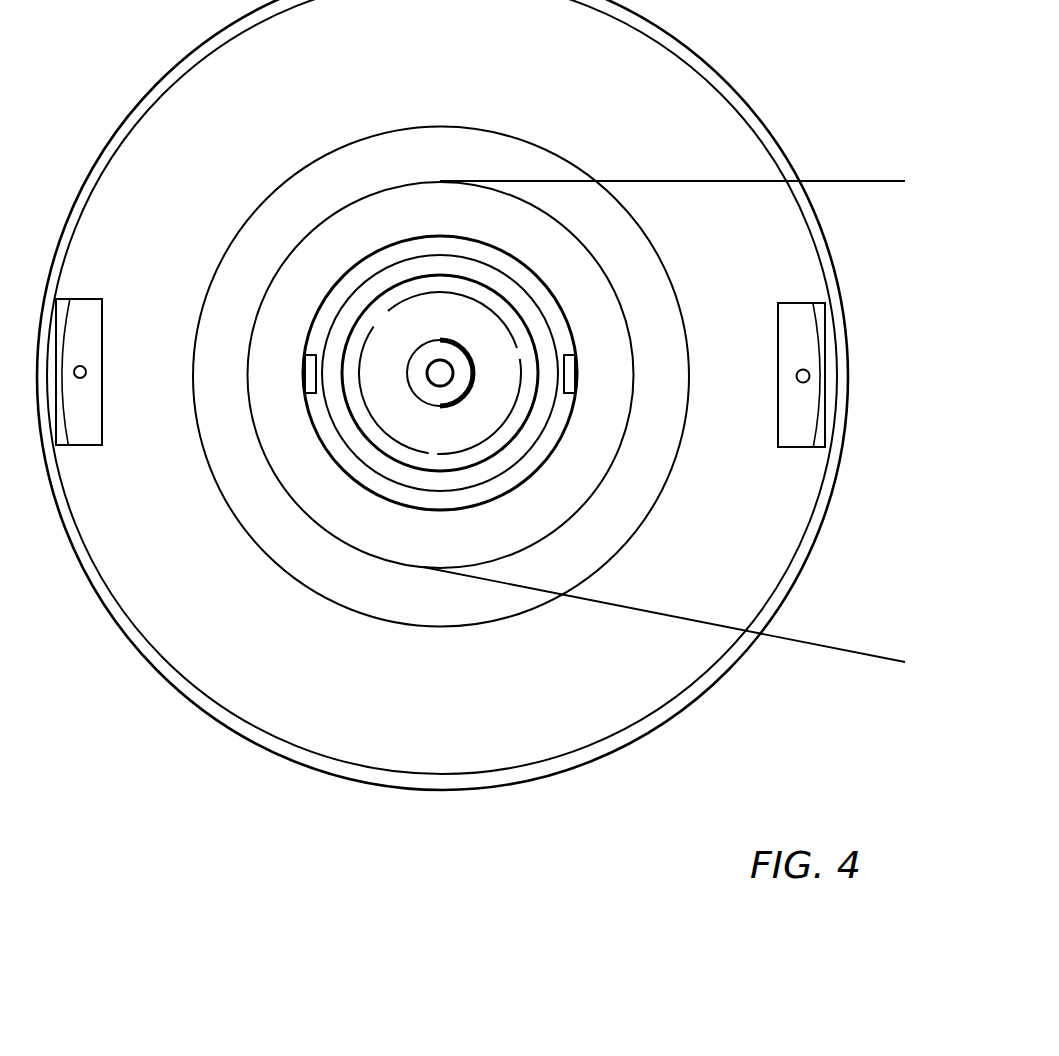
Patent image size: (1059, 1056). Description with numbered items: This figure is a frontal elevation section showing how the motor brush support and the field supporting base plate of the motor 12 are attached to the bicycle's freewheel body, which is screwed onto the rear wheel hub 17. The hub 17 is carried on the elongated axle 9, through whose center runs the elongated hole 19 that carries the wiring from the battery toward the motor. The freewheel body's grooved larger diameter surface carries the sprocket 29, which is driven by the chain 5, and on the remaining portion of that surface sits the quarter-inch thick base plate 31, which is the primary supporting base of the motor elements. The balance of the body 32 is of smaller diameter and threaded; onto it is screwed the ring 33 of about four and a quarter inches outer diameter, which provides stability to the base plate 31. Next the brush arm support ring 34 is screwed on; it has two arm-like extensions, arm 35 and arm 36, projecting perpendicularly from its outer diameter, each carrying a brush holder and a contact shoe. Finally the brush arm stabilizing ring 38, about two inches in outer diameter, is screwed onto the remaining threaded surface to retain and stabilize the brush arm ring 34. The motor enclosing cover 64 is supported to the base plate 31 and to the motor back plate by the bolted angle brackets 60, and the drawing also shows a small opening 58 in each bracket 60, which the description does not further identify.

The chain 5 is at (729, 626).
The axle 9 is at (447, 407).
The motor 12 is at (447, 408).
The rear wheel hub 17 is at (521, 374).
The elongated hole 19 is at (438, 360).
The sprocket 29 is at (518, 557).
The base plate 31 is at (802, 578).
The smaller diameter end of the body 32 is at (453, 277).
The ring 33 is at (622, 548).
The brush arm support ring 34 is at (535, 268).
The arm 35 is at (576, 378).
The arm 36 is at (306, 375).
The brush arm stabilizing ring 38 is at (537, 303).
The mounting hole 58 is at (87, 369).
The angle brackets 60 is at (80, 312).
The motor enclosing cover 64 is at (290, 744).